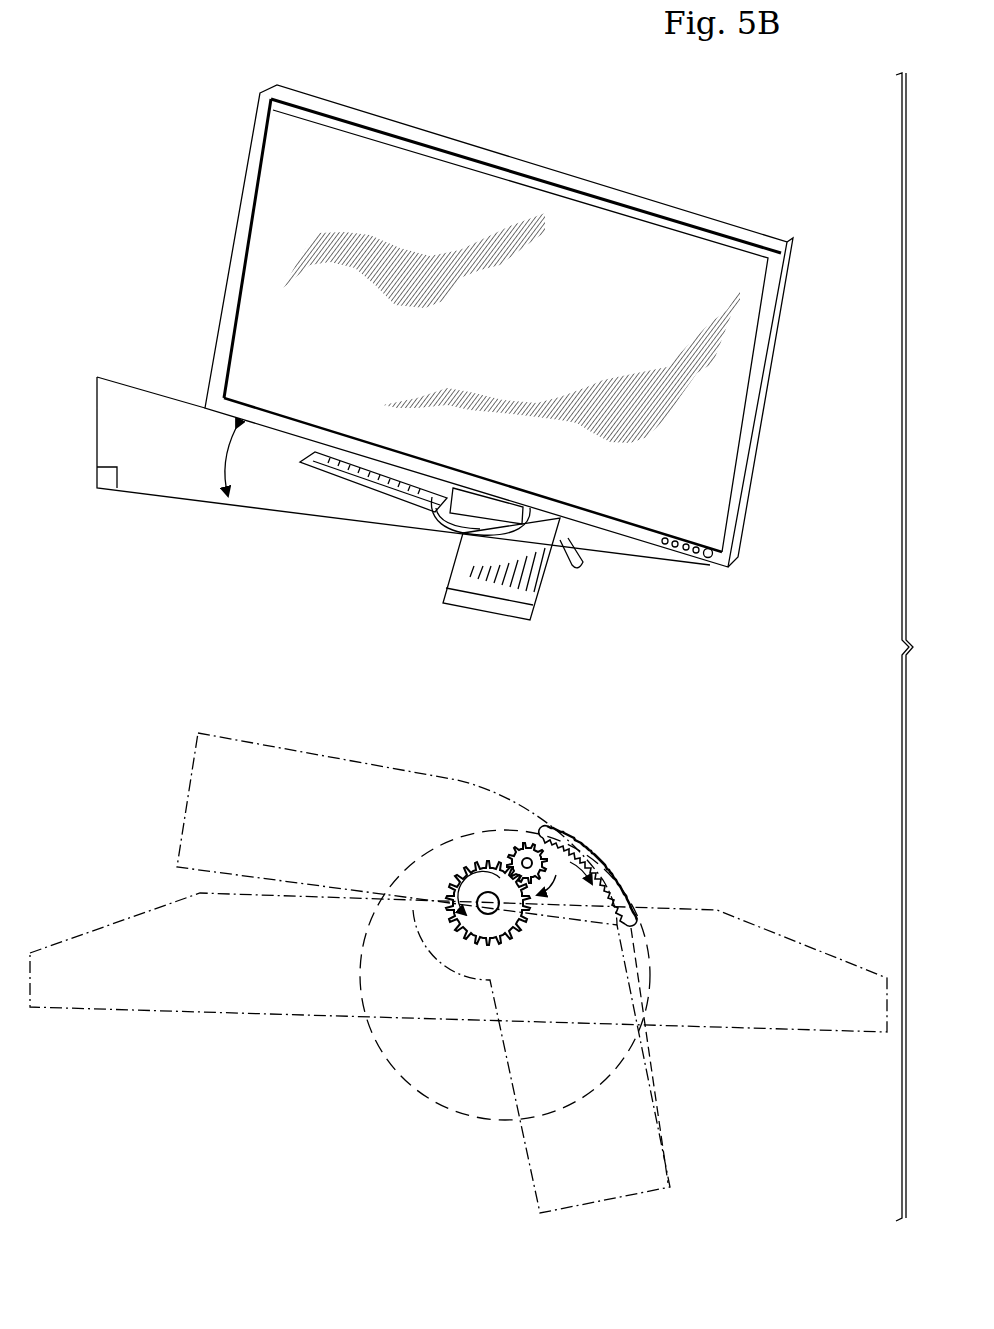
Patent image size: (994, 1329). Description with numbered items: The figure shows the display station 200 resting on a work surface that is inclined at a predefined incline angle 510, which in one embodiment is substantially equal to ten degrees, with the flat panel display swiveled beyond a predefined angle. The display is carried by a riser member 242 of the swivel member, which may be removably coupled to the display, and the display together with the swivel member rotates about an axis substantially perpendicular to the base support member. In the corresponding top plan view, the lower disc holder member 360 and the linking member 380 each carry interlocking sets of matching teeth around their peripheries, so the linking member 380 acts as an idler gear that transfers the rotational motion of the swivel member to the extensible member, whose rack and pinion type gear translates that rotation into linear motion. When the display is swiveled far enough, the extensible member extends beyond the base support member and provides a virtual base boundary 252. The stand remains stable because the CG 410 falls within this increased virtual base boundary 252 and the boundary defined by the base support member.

The display station 200 is at (771, 205).
The riser member 242 is at (478, 498).
The virtual base boundary 252 is at (660, 1077).
The lower disc holder member 360 is at (520, 920).
The linking member 380 is at (513, 850).
The CG 410 is at (457, 1113).
The predefined incline angle 510 is at (232, 460).